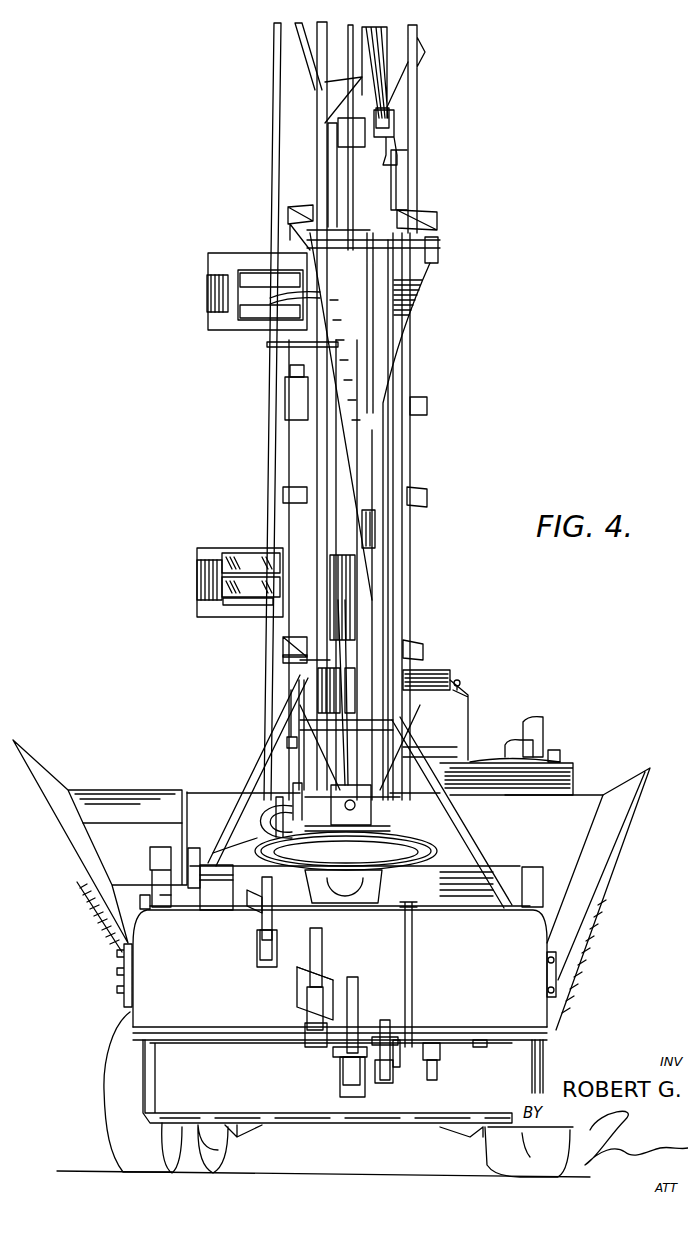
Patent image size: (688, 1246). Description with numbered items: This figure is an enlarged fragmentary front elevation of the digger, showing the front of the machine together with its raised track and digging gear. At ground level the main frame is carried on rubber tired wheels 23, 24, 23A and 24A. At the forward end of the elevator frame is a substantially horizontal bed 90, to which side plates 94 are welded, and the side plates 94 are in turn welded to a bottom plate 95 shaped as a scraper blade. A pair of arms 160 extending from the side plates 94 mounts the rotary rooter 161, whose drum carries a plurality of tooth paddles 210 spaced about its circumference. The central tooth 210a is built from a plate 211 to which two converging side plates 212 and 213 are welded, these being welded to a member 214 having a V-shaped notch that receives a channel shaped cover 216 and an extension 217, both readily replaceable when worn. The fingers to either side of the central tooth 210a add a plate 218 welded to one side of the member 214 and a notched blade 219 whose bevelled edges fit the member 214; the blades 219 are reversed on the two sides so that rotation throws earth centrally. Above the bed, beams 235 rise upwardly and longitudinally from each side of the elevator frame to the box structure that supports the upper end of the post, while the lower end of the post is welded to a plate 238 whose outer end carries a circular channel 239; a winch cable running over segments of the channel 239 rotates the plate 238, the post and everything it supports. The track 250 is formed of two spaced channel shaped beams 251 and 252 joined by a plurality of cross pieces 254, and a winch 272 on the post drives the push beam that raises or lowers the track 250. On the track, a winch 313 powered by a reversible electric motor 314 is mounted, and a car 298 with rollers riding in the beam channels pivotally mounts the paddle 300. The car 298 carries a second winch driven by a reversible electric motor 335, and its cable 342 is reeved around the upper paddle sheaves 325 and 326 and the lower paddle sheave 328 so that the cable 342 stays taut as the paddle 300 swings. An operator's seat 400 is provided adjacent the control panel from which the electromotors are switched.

The wheel 23 is at (217, 1155).
The wheel 23A is at (497, 1147).
The wheel 24 is at (123, 1152).
The wheel 24A is at (515, 1165).
The bed 90 is at (554, 824).
The side plates 94 is at (75, 835).
The bottom plate 95 is at (297, 1118).
The arms 160 is at (118, 967).
The rotary rooter 161 is at (237, 1016).
The tooth paddles 210 is at (210, 918).
The central tooth 210a is at (364, 986).
The plate 211 is at (337, 1060).
The side plate 212 is at (345, 1037).
The side plate 213 is at (342, 1023).
The member 214 is at (318, 945).
The channel shaped cover 216 is at (260, 952).
The extension 217 is at (157, 858).
The plate 218 is at (270, 900).
The notched blade 219 is at (150, 905).
The beams 235 is at (252, 787).
The plate 238 is at (327, 839).
The circular channel 239 is at (440, 853).
The track 250 is at (411, 451).
The beam 251 is at (400, 578).
The beam 252 is at (308, 654).
The cross pieces 254 is at (294, 216).
The winch 272 is at (313, 683).
The car 298 is at (295, 457).
The paddle 300 is at (374, 462).
The winch 313 is at (343, 618).
The reversible electric motor 314 is at (200, 592).
The sheave 325 is at (389, 117).
The sheave 326 is at (387, 124).
The sheave 328 is at (376, 527).
The reversible electric motor 335 is at (213, 301).
The cable 342 is at (387, 92).
The operator's seat 400 is at (537, 738).